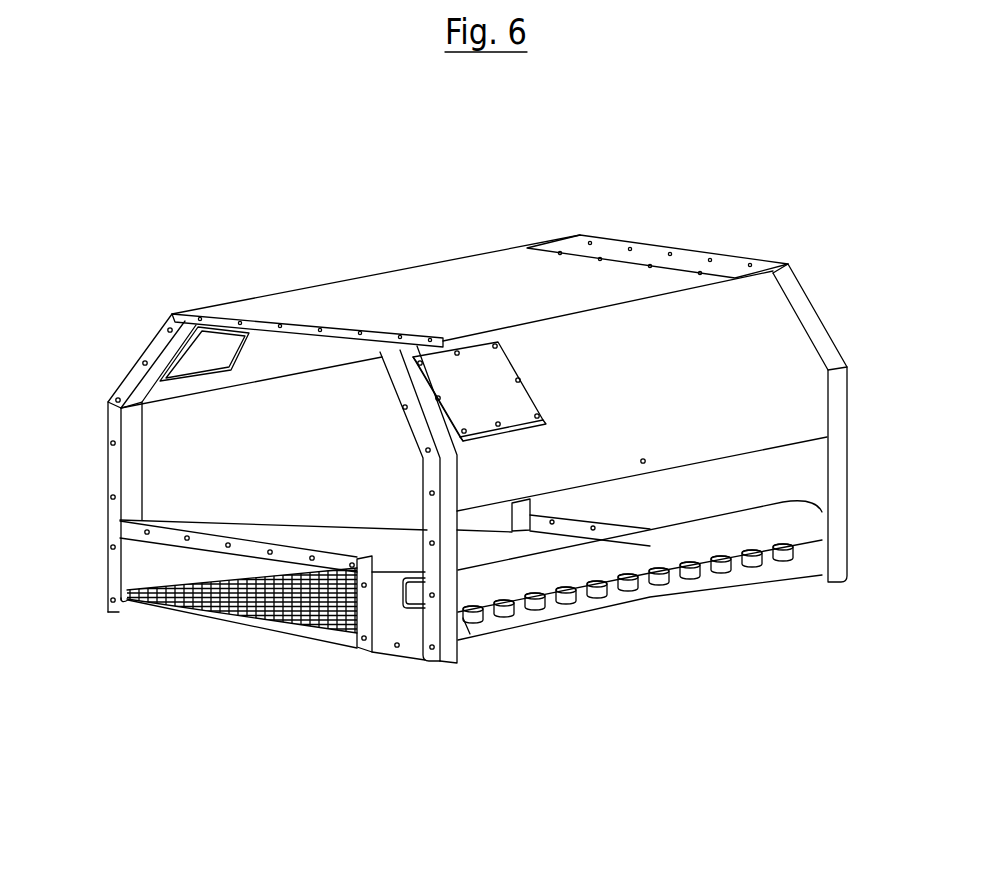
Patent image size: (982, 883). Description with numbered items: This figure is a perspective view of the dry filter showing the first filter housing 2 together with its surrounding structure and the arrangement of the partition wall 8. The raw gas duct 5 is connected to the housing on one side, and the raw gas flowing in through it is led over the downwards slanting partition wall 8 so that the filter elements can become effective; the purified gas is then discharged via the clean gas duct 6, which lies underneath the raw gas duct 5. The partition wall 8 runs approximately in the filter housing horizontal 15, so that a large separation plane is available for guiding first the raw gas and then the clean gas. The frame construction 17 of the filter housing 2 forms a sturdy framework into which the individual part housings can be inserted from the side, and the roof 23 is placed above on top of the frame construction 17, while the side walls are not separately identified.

The first filter housing 2 is at (683, 583).
The raw gas duct 5 is at (785, 469).
The clean gas duct 6 is at (160, 458).
The partition wall 8 is at (388, 570).
The filter housing horizontal 15 is at (247, 435).
The frame construction 17 is at (445, 623).
The roof 23 is at (428, 285).